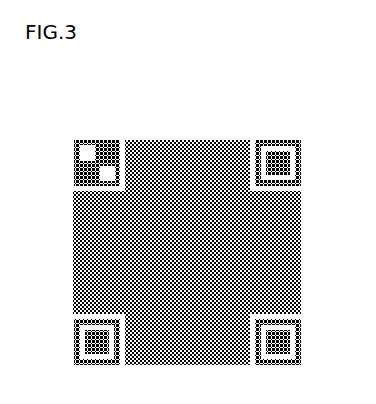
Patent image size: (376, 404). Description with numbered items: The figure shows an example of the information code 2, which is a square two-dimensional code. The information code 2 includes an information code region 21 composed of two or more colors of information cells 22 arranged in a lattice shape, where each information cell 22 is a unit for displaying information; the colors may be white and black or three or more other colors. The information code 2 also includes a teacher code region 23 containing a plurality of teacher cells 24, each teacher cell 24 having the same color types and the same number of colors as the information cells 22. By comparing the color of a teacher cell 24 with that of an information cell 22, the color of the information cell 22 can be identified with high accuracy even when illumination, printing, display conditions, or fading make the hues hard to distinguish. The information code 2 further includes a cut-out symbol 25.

The information code 2 is at (249, 121).
The information code region 21 is at (64, 239).
The information cell 22 is at (65, 201).
The teacher code region 23 is at (133, 358).
The teacher cell 24 is at (117, 357).
The cut-out symbol 25 is at (292, 340).